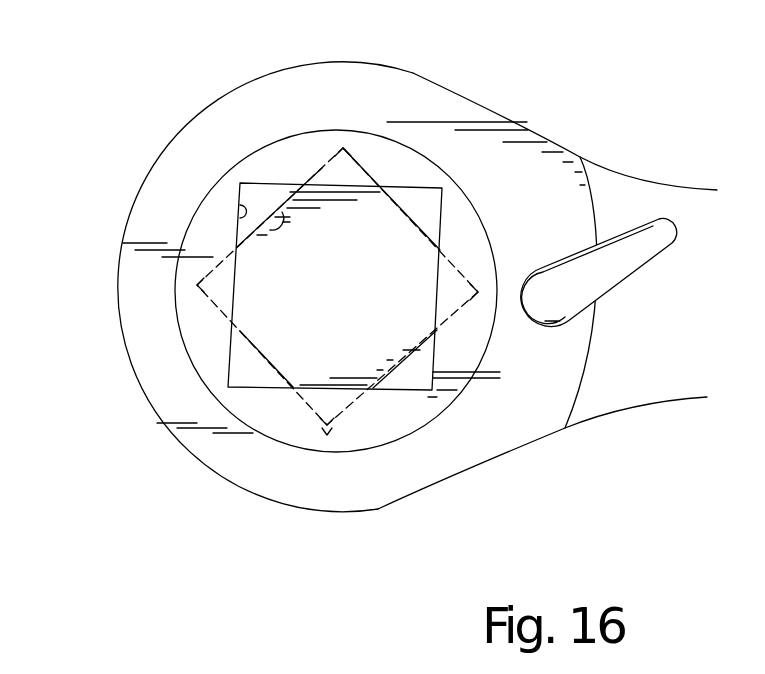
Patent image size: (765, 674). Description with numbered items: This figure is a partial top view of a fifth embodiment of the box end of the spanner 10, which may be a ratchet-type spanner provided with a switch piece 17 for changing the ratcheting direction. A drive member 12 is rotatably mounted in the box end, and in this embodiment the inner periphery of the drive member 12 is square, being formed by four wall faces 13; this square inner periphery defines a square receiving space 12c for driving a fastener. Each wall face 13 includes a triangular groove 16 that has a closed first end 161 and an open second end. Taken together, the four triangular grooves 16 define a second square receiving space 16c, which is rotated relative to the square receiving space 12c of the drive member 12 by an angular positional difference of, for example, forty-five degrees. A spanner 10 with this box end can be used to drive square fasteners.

The spanner 10 is at (585, 447).
The drive member 12 is at (360, 137).
The square receiving space 12c is at (270, 230).
The wall face 13 is at (240, 207).
The triangular groove 16 is at (323, 163).
The closed first end 161 is at (377, 162).
The square receiving space 16c is at (327, 435).
The switch piece 17 is at (663, 227).